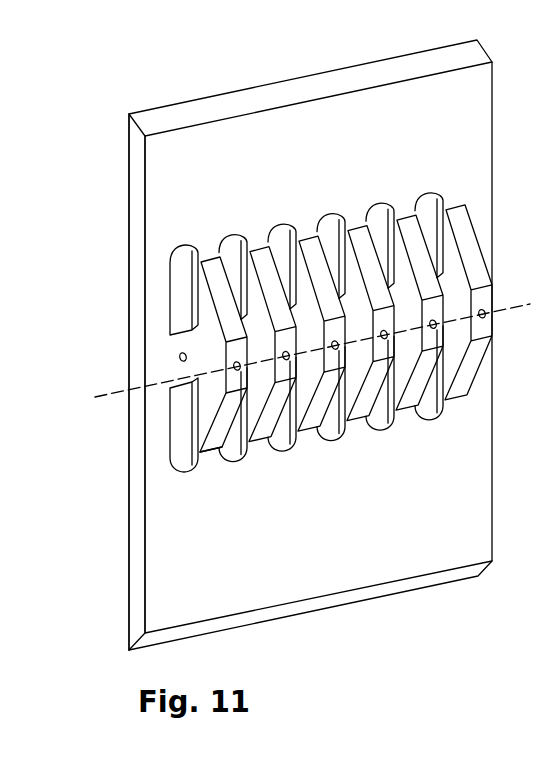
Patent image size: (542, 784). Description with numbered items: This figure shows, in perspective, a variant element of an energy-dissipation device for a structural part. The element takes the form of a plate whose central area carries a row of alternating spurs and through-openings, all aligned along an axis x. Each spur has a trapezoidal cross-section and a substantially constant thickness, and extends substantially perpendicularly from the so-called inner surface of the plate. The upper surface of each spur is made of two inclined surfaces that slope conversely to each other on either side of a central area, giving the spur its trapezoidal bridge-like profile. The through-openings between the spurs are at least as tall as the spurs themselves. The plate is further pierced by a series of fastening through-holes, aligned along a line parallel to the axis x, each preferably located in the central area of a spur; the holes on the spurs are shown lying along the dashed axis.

The axis x is at (107, 393).